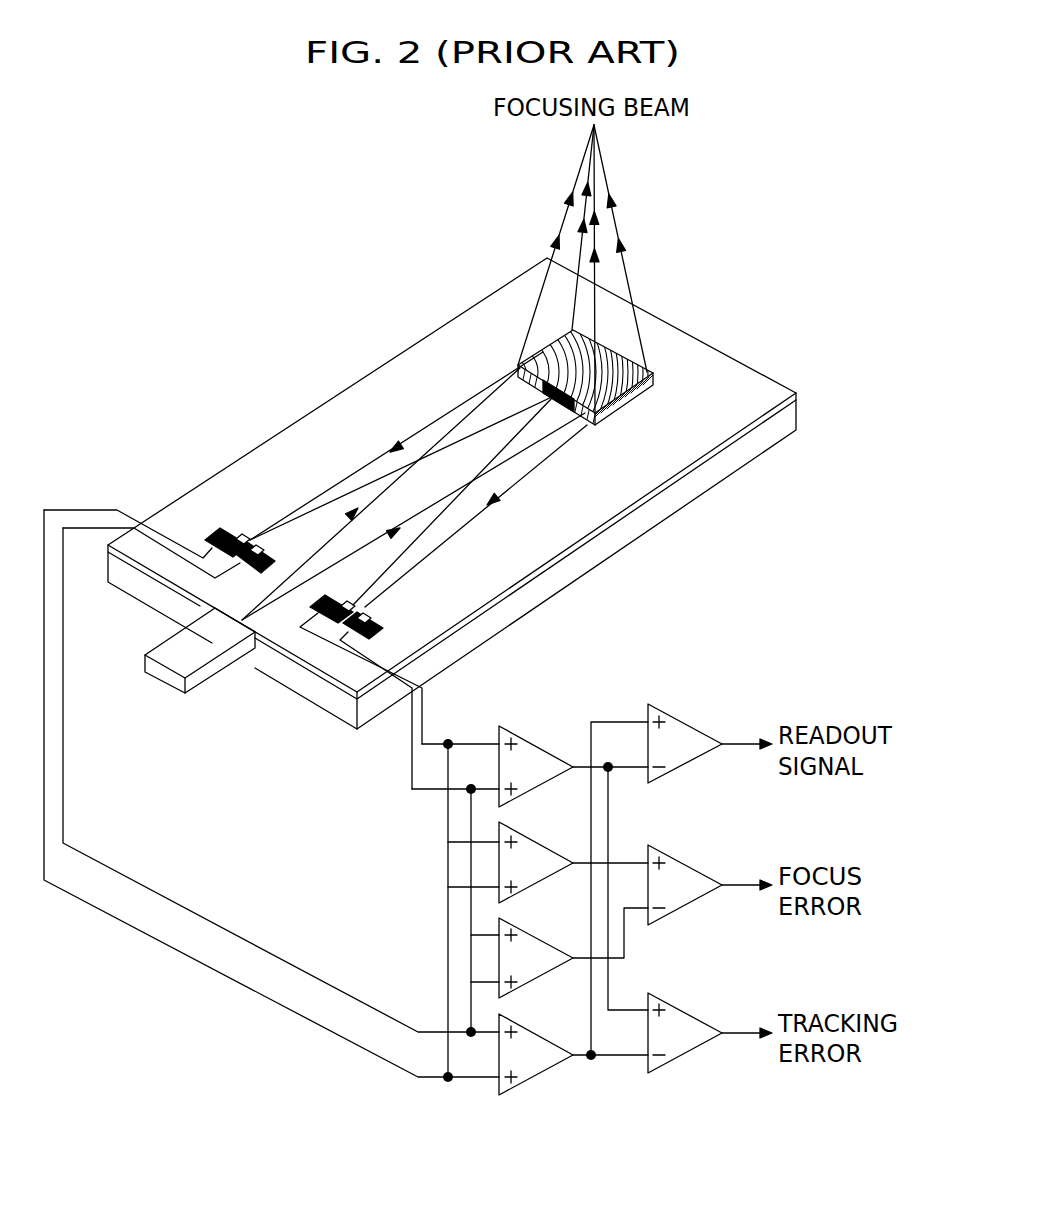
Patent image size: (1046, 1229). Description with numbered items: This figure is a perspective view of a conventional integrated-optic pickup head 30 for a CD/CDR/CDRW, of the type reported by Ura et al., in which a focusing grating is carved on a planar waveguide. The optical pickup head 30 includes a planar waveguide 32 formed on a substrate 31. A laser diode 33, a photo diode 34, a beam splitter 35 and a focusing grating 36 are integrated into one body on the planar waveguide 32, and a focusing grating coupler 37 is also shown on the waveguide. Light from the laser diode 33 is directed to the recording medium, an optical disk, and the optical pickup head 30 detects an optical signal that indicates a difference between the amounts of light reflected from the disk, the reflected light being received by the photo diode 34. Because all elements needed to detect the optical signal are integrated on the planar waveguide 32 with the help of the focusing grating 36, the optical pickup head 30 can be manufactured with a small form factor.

The optical pickup head 30 is at (752, 223).
The substrate 31 is at (567, 577).
The planar waveguide 32 is at (623, 513).
The laser diode 33 is at (165, 694).
The photo diode 34 is at (383, 635).
The beam splitter 35 is at (593, 420).
The focusing grating 36 is at (633, 378).
The focusing grating coupler 37 is at (543, 352).